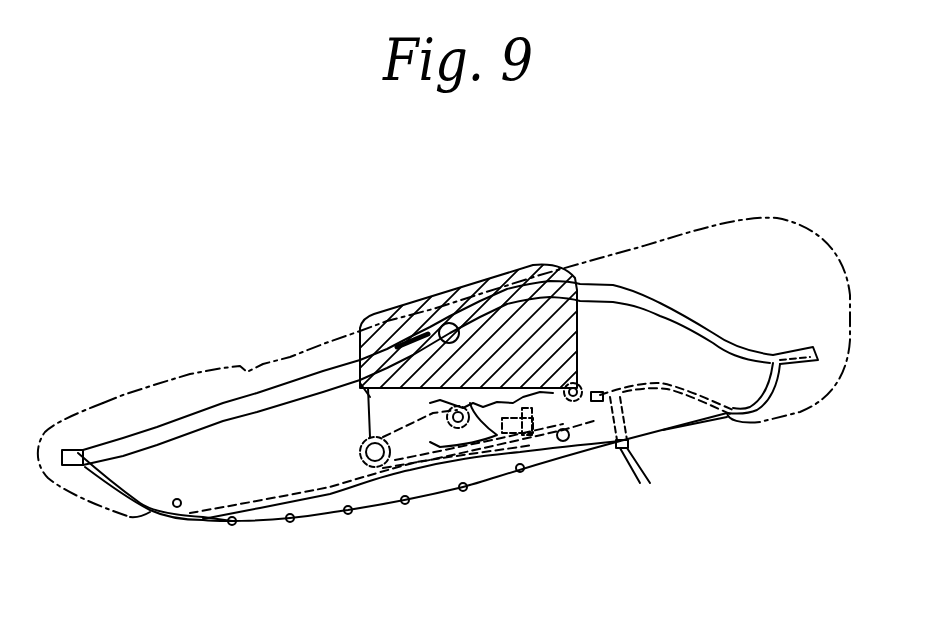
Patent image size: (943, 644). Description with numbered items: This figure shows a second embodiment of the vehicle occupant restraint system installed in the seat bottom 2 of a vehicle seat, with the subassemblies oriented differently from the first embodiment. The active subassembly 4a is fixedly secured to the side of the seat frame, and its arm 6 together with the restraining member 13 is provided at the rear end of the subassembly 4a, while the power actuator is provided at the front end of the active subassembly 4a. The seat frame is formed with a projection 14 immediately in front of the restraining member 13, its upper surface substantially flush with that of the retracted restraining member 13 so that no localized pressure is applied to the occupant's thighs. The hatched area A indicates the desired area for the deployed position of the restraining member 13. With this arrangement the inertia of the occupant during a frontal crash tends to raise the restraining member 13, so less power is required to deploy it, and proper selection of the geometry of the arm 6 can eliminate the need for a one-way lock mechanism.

The seat bottom 2 is at (847, 267).
The active subassembly 4a is at (543, 450).
The arm 6 is at (433, 370).
The restraining member 13 is at (449, 336).
The projection 14 is at (647, 392).
The hatched area A is at (382, 337).